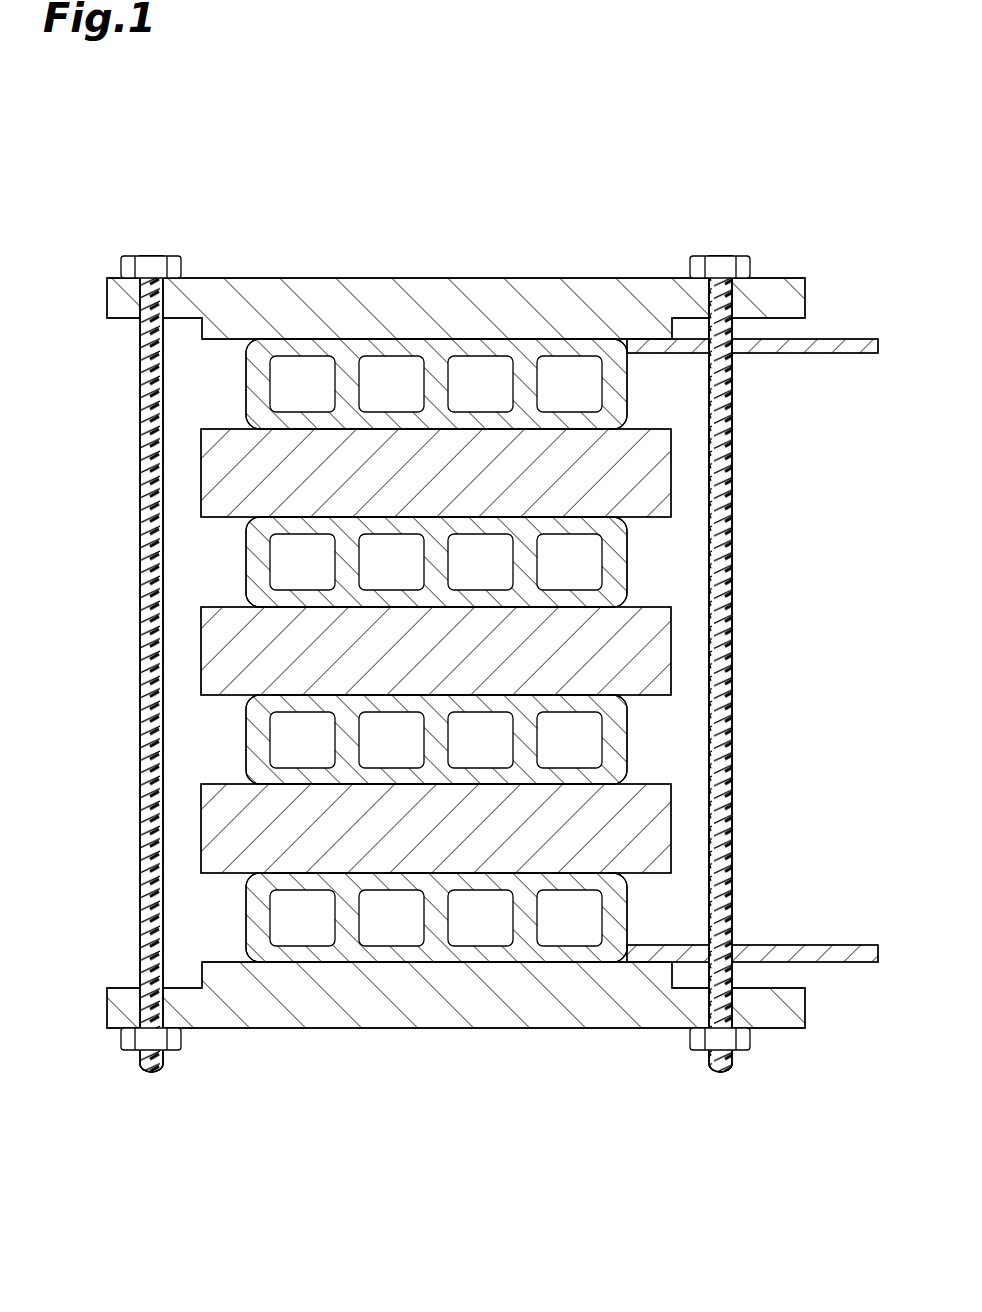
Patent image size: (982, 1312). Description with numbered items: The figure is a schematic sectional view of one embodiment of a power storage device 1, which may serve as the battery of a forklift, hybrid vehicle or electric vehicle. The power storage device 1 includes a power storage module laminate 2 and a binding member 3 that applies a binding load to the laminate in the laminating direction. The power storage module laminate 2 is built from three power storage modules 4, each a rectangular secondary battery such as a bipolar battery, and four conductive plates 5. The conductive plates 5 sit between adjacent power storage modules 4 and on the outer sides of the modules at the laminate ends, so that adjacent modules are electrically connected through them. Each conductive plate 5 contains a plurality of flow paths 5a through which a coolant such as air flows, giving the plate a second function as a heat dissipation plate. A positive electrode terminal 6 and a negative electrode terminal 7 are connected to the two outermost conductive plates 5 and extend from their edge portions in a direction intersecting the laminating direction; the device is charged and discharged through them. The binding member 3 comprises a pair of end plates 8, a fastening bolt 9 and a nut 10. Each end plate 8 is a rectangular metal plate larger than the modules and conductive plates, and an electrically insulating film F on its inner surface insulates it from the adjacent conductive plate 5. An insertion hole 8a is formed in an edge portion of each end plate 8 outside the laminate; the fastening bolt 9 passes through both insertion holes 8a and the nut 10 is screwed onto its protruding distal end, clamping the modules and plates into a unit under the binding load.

The power storage device 1 is at (133, 186).
The power storage module laminate 2 is at (183, 583).
The binding member 3 is at (805, 262).
The power storage module 4 is at (671, 473).
The conductive plate 5 is at (627, 403).
The flow path 5a is at (265, 394).
The positive electrode terminal 6 is at (850, 945).
The negative electrode terminal 7 is at (846, 355).
The end plate 8 is at (465, 278).
The insertion hole 8a is at (154, 298).
The fastening bolt 9 is at (733, 522).
The nut 10 is at (130, 1050).
The film F is at (206, 338).